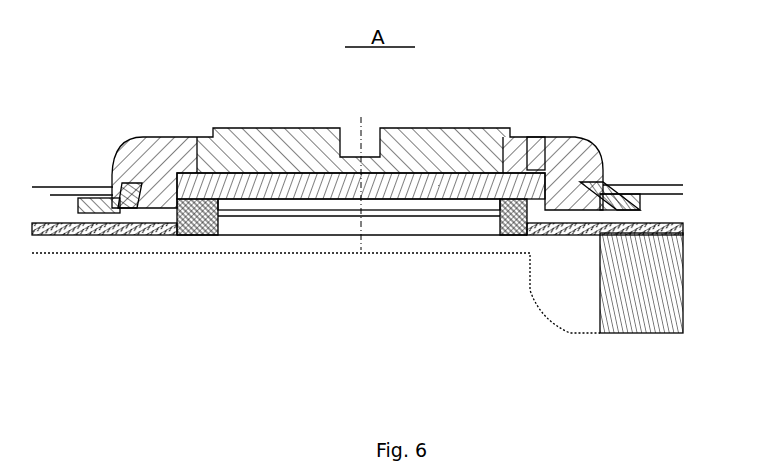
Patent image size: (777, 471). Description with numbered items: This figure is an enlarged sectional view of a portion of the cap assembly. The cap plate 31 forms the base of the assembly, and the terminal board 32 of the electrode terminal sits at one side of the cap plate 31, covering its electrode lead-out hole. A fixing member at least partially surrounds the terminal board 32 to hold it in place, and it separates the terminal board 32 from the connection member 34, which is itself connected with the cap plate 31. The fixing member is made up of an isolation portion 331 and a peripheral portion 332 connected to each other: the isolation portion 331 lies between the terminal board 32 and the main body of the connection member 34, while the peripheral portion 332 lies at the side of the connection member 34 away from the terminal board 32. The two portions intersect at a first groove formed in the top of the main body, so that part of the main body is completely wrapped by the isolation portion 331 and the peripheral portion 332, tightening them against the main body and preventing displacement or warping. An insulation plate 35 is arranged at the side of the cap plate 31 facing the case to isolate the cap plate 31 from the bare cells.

The cap plate 31 is at (582, 213).
The terminal board 32 is at (430, 140).
The isolation portion 331 is at (548, 177).
The peripheral portion 332 is at (602, 188).
The connection member 34 is at (633, 203).
The insulation plate 35 is at (647, 317).